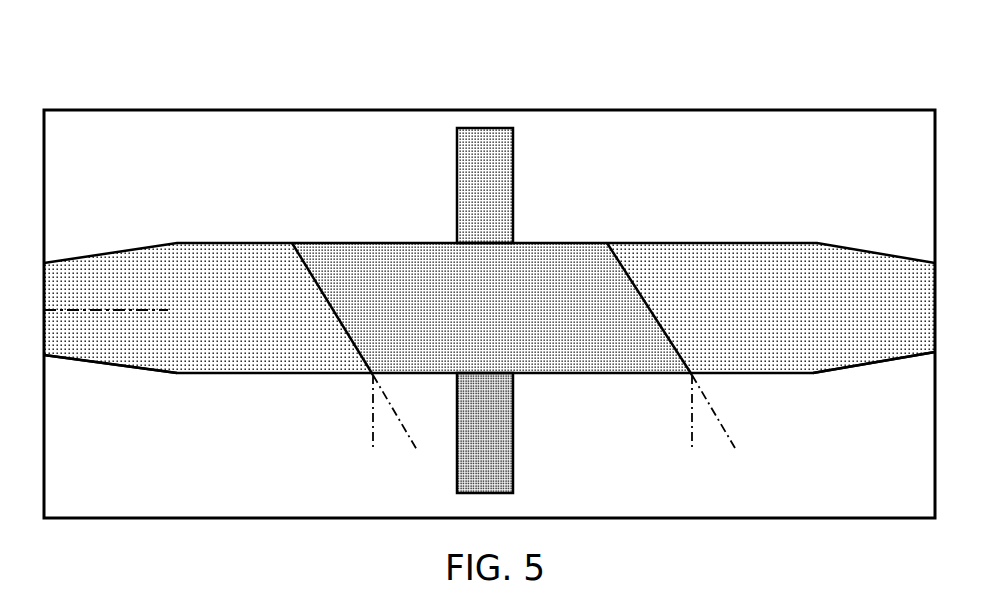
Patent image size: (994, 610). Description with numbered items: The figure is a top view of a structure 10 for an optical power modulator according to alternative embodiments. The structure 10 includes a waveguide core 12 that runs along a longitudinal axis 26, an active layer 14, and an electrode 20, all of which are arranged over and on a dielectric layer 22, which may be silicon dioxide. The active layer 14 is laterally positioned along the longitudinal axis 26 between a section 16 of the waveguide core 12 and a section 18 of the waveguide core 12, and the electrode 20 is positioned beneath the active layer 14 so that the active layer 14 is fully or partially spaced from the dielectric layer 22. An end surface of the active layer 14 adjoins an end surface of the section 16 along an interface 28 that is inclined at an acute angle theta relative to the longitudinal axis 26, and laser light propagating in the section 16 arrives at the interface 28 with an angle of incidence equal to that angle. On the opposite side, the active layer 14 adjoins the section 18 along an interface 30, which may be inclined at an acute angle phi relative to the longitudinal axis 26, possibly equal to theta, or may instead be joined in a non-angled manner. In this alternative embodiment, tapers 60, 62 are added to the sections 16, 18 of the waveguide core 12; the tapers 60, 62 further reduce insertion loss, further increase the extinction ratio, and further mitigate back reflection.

The structure 10 is at (126, 70).
The waveguide core 12 is at (209, 398).
The active layer 14 is at (528, 262).
The section of the waveguide core 16 is at (210, 300).
The section of the waveguide core 18 is at (755, 292).
The electrode 20 is at (496, 440).
The dielectric layer 22 is at (106, 470).
The longitudinal axis 26 is at (108, 300).
The interface 28 is at (318, 283).
The interface 30 is at (632, 282).
The taper 60 is at (83, 338).
The taper 62 is at (892, 317).